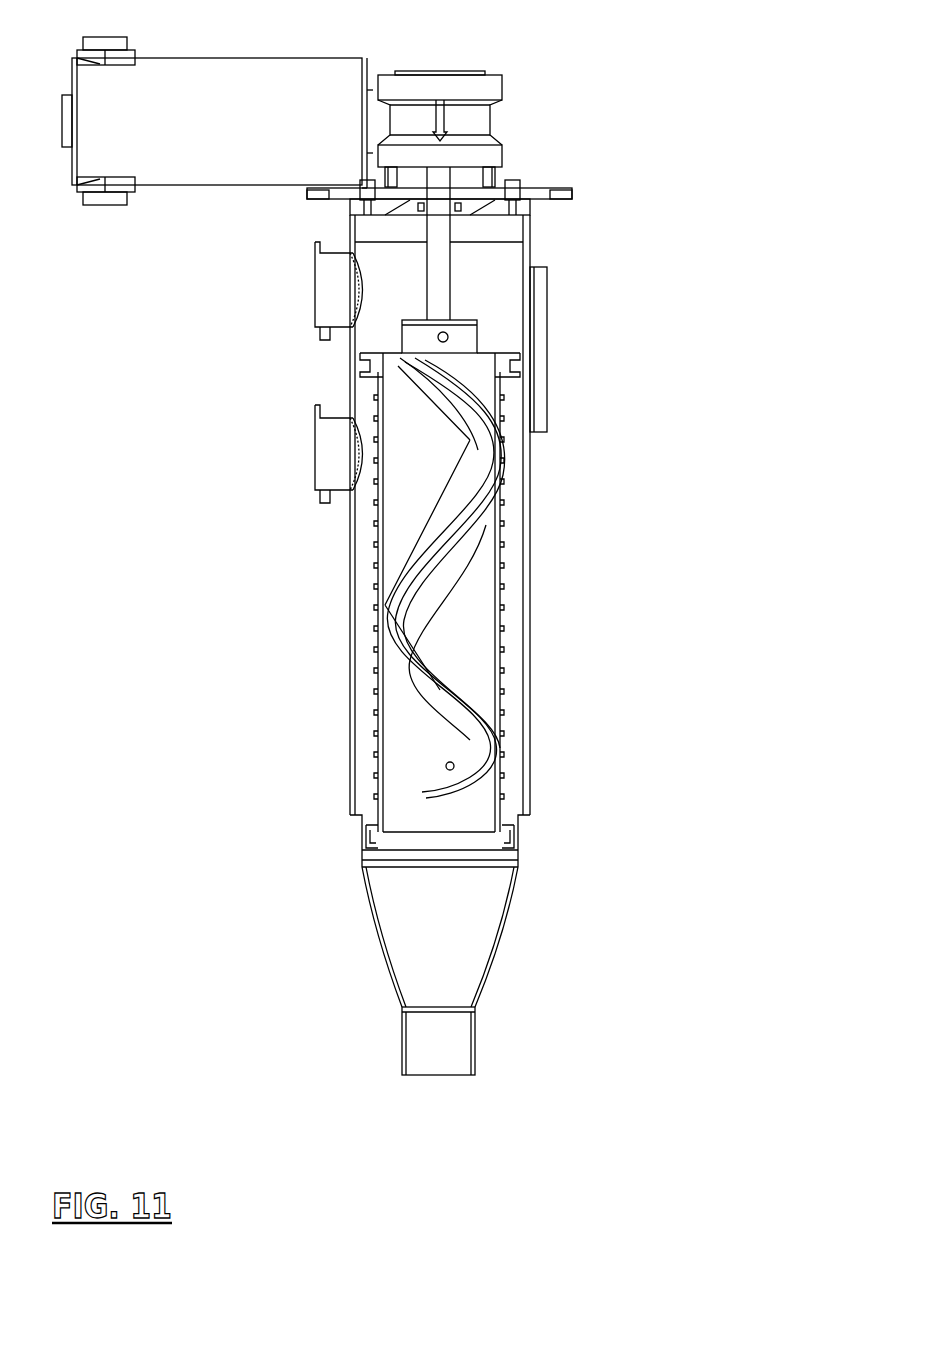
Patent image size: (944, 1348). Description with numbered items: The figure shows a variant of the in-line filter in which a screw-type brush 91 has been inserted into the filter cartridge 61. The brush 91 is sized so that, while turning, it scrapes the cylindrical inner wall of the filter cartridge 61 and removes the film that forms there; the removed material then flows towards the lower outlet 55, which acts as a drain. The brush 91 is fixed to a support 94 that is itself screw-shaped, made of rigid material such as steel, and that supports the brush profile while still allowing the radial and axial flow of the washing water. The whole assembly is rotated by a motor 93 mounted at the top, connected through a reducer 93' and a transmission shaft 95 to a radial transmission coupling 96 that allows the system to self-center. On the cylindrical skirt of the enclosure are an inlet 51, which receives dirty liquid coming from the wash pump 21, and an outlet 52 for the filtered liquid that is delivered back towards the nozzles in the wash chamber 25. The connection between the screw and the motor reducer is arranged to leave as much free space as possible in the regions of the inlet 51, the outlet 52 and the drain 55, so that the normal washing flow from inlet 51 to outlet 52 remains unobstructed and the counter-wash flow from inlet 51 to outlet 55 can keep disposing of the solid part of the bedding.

The motor 93 is at (217, 102).
The gearbox 93' is at (512, 129).
The transmission shaft 95 is at (440, 302).
The radial transmission coupling 96 is at (448, 335).
The screw-type brush 91 is at (490, 443).
The screw-type support 94 is at (455, 651).
The filter cartridge 61 is at (500, 592).
The inlet 51 is at (332, 290).
The outlet 52 is at (329, 472).
The wash pump 21 is at (297, 287).
The wash chamber 25 is at (297, 441).
The outlet 55 is at (438, 1080).